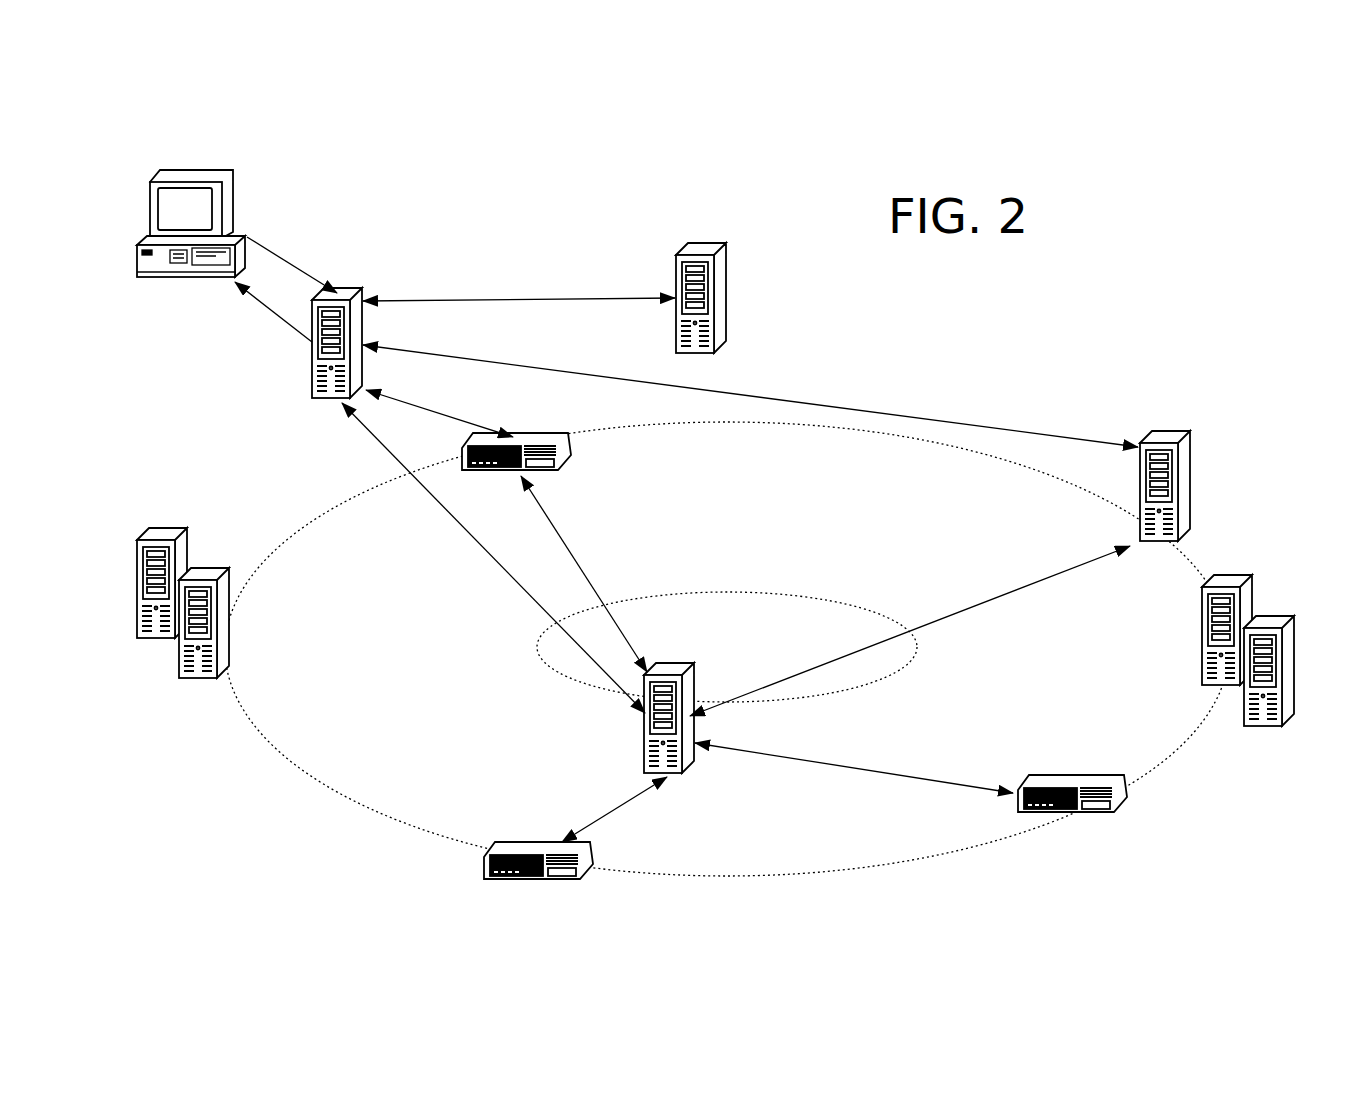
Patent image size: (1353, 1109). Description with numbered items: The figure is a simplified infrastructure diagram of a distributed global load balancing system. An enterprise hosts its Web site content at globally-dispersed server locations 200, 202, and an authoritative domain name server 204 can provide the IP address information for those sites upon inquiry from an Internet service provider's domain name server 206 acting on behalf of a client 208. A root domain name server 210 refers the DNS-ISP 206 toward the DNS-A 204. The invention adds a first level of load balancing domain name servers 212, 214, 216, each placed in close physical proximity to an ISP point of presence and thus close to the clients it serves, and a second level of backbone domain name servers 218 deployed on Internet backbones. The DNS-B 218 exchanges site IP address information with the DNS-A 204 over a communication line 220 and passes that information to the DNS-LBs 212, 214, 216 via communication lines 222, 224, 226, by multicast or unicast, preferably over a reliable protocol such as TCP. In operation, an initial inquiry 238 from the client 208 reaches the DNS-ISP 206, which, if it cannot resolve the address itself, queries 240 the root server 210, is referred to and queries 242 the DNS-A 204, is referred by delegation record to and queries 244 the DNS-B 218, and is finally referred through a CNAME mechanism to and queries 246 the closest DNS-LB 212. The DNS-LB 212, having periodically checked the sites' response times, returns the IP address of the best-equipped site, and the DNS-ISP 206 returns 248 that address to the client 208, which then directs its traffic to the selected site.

The server location 200 is at (1240, 576).
The server location 202 is at (173, 527).
The authoritative domain name server 204 is at (1177, 430).
The Internet service provider's domain name server 206 is at (349, 288).
The client 208 is at (203, 165).
The root domain name server 210 is at (712, 245).
The load balancing domain name server 212 is at (545, 428).
The load balancing domain name server 214 is at (517, 880).
The load balancing domain name server 216 is at (1112, 815).
The backbone domain name server 218 is at (680, 663).
The communication line 220 is at (925, 627).
The communication line 222 is at (570, 552).
The communication line 224 is at (605, 815).
The communication line 226 is at (922, 783).
The initial inquiry 238 is at (272, 245).
The query to root server 240 is at (518, 300).
The query to DNS-A 242 is at (543, 365).
The query to DNS-B 244 is at (385, 440).
The query to DNS-LB 246 is at (423, 408).
The return of address 248 is at (295, 333).